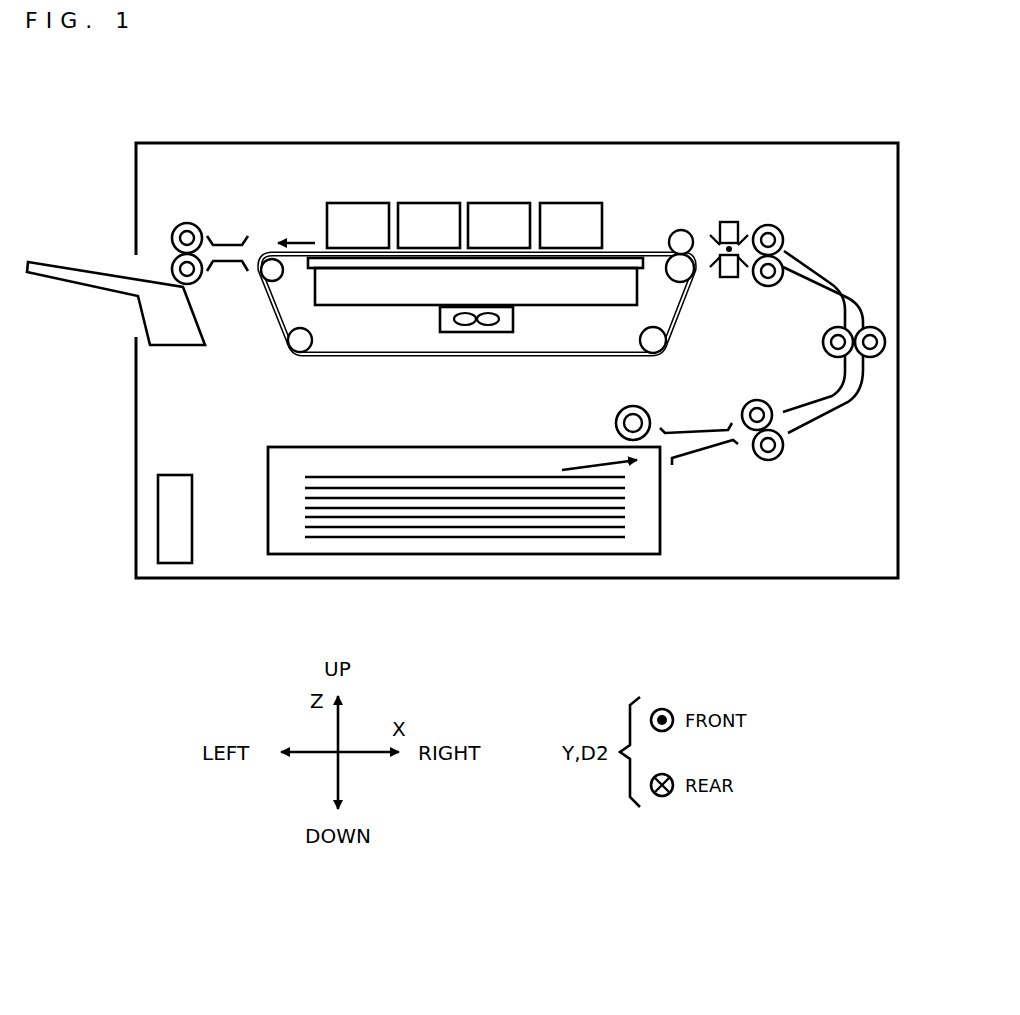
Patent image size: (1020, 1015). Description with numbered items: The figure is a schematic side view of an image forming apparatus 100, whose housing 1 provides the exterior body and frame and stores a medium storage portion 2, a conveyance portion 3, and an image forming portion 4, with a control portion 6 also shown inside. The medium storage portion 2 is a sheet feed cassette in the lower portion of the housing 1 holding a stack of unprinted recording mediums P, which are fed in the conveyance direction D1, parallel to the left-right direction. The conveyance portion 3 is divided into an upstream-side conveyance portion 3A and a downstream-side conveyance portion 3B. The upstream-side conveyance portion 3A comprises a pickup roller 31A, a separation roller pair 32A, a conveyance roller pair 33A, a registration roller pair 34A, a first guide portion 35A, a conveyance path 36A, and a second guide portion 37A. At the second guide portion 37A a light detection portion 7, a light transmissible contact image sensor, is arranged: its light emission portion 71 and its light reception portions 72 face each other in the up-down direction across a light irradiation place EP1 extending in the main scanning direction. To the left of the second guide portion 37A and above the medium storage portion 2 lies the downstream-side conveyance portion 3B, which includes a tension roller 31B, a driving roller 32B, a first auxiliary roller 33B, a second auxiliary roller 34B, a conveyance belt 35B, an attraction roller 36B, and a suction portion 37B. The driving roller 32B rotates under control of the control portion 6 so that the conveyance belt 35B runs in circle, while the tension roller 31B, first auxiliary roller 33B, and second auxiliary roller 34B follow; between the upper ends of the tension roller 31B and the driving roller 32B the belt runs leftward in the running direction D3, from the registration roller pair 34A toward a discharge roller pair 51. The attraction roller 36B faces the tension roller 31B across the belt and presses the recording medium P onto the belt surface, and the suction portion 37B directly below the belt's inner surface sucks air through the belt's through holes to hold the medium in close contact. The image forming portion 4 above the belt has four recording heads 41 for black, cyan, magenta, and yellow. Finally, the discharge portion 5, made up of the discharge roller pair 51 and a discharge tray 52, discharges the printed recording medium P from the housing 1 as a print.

The image forming apparatus 100 is at (163, 106).
The housing 1 is at (215, 577).
The medium storage portion 2 is at (466, 543).
The conveyance portion 3 is at (525, 402).
The upstream-side conveyance portion 3A is at (744, 542).
The downstream-side conveyance portion 3B is at (308, 377).
The image forming portion 4 is at (464, 149).
The recording head 41 is at (600, 97).
The discharge portion 5 is at (172, 221).
The discharge roller pair 51 is at (198, 214).
The discharge tray 52 is at (90, 268).
The control portion 6 is at (158, 518).
The light detection portion 7 is at (712, 216).
The light emission portion 71 is at (722, 222).
The light reception portion 72 is at (735, 279).
The pickup roller 31A is at (613, 425).
The tension roller 31B is at (689, 282).
The separation roller pair 32A is at (769, 471).
The driving roller 32B is at (266, 283).
The conveyance roller pair 33A is at (815, 347).
The first auxiliary roller 33B is at (664, 347).
The registration roller pair 34A is at (797, 236).
The second auxiliary roller 34B is at (285, 349).
The first guide portion 35A is at (702, 452).
The conveyance belt 35B is at (405, 357).
The conveyance path 36A is at (831, 420).
The attraction roller 36B is at (668, 241).
The second guide portion 37A is at (712, 236).
The suction portion 37B is at (438, 321).
The recording medium P is at (430, 538).
The conveyance direction D1 is at (625, 465).
The running direction D3 is at (296, 231).
The light irradiation place EP1 is at (742, 230).